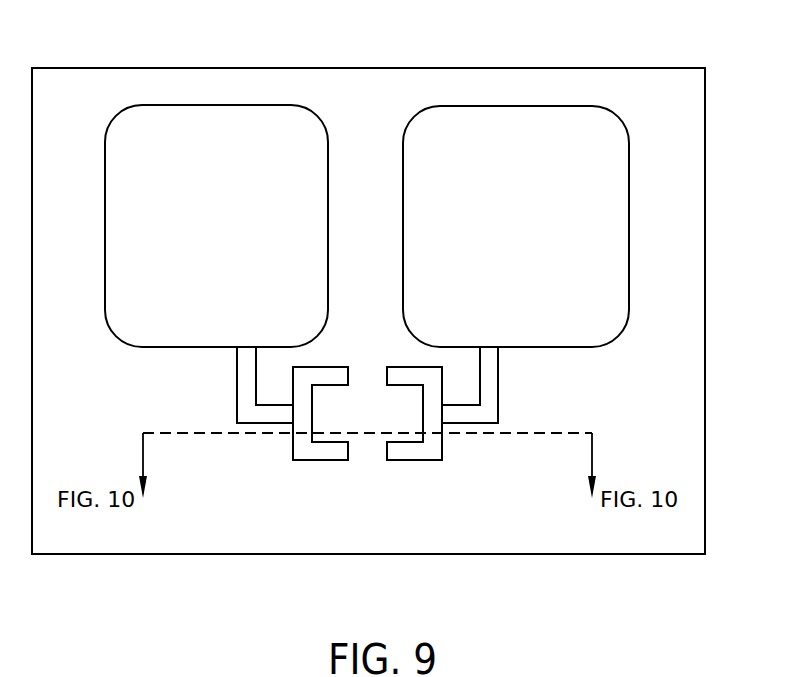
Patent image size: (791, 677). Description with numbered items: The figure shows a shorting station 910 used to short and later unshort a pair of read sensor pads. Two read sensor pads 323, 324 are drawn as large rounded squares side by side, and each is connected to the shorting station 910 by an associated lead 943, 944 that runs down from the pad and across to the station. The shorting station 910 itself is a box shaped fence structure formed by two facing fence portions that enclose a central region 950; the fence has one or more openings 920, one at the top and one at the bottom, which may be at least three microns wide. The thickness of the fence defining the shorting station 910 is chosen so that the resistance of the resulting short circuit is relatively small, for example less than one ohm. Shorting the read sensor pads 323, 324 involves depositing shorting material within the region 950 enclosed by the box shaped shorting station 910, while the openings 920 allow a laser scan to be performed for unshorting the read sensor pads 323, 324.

The read sensor pad 323 is at (213, 122).
The read sensor pad 324 is at (522, 122).
The lead 943 is at (237, 384).
The lead 944 is at (498, 379).
The shorting station 910 is at (301, 478).
The openings 920 is at (371, 372).
The region 950 is at (390, 426).